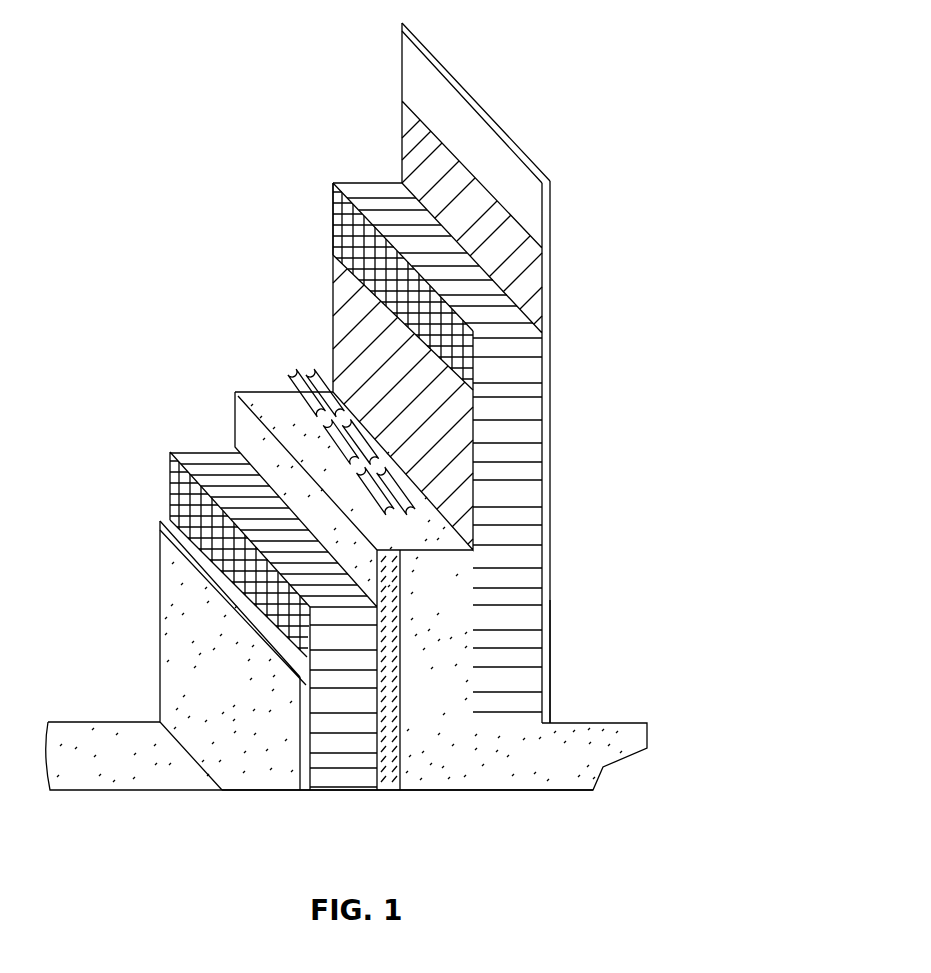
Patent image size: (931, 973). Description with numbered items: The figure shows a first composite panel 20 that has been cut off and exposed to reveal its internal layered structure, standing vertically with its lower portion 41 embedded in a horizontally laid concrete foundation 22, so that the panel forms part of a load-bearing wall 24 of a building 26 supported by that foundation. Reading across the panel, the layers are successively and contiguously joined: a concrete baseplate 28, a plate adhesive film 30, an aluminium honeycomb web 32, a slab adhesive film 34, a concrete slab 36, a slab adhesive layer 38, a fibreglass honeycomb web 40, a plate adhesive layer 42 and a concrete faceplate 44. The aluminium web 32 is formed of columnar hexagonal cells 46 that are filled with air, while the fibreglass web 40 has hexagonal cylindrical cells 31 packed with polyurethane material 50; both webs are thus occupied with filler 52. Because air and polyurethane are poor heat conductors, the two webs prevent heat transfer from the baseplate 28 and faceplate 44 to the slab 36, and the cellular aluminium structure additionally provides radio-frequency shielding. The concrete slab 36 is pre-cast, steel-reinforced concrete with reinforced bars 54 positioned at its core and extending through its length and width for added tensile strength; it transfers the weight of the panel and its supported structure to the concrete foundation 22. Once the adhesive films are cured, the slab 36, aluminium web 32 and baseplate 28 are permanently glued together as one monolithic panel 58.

The first composite panel 20 is at (461, 365).
The load-bearing wall 24 is at (461, 365).
The building 26 is at (461, 365).
The concrete faceplate 44 is at (422, 56).
The plate adhesive layer 42 is at (400, 117).
The cells 31 is at (530, 370).
The lower portion 41 is at (552, 704).
The fibreglass honeycomb web 40 is at (385, 268).
The polyurethane material 50 is at (352, 183).
The filler 52 is at (299, 402).
The slab adhesive layer 38 is at (333, 254).
The concrete slab 36 is at (257, 392).
The reinforced bars 54 is at (306, 364).
The aluminium honeycomb web 32 is at (217, 519).
The cells 46 is at (178, 451).
The slab adhesive film 34 is at (235, 449).
The plate adhesive film 30 is at (172, 517).
The concrete baseplate 28 is at (237, 693).
The concrete foundation 22 is at (597, 724).
The monolithic panel 58 is at (437, 833).